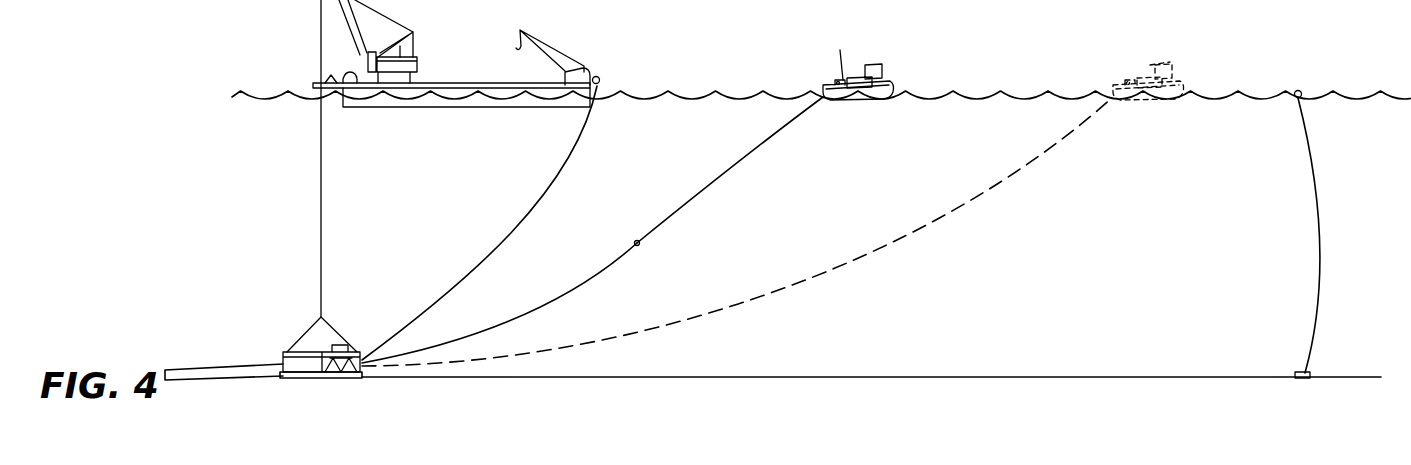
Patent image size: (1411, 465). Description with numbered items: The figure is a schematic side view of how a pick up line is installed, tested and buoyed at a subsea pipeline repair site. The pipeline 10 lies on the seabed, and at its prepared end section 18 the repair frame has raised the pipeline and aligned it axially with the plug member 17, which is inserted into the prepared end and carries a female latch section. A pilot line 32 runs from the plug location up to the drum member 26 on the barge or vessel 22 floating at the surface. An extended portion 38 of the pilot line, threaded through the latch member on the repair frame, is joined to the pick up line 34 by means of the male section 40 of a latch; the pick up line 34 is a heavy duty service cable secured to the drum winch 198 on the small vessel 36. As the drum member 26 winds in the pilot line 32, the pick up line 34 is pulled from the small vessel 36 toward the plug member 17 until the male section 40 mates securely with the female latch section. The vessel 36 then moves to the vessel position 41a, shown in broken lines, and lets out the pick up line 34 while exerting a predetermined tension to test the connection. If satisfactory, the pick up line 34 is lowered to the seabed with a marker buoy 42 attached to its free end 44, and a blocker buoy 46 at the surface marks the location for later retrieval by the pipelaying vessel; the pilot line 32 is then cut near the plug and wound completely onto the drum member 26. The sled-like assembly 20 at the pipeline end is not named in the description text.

The pipeline 10 is at (195, 368).
The plug member 17 is at (347, 376).
The prepared end section 18 is at (302, 375).
The pulling sled 20 is at (298, 357).
The barge or vessel 22 is at (457, 107).
The drum member 26 is at (604, 79).
The pilot line 32 is at (523, 228).
The pick up line 34 is at (740, 160).
The small vessel 36 is at (884, 104).
The extended portion of the pilot line 38 is at (547, 300).
The male section of a latch 40 is at (637, 241).
The vessel position 41a is at (1173, 64).
The marker buoy 42 is at (1322, 275).
The free end 44 is at (1300, 371).
The blocker buoy 46 is at (1300, 91).
The drum winch 198 is at (838, 82).